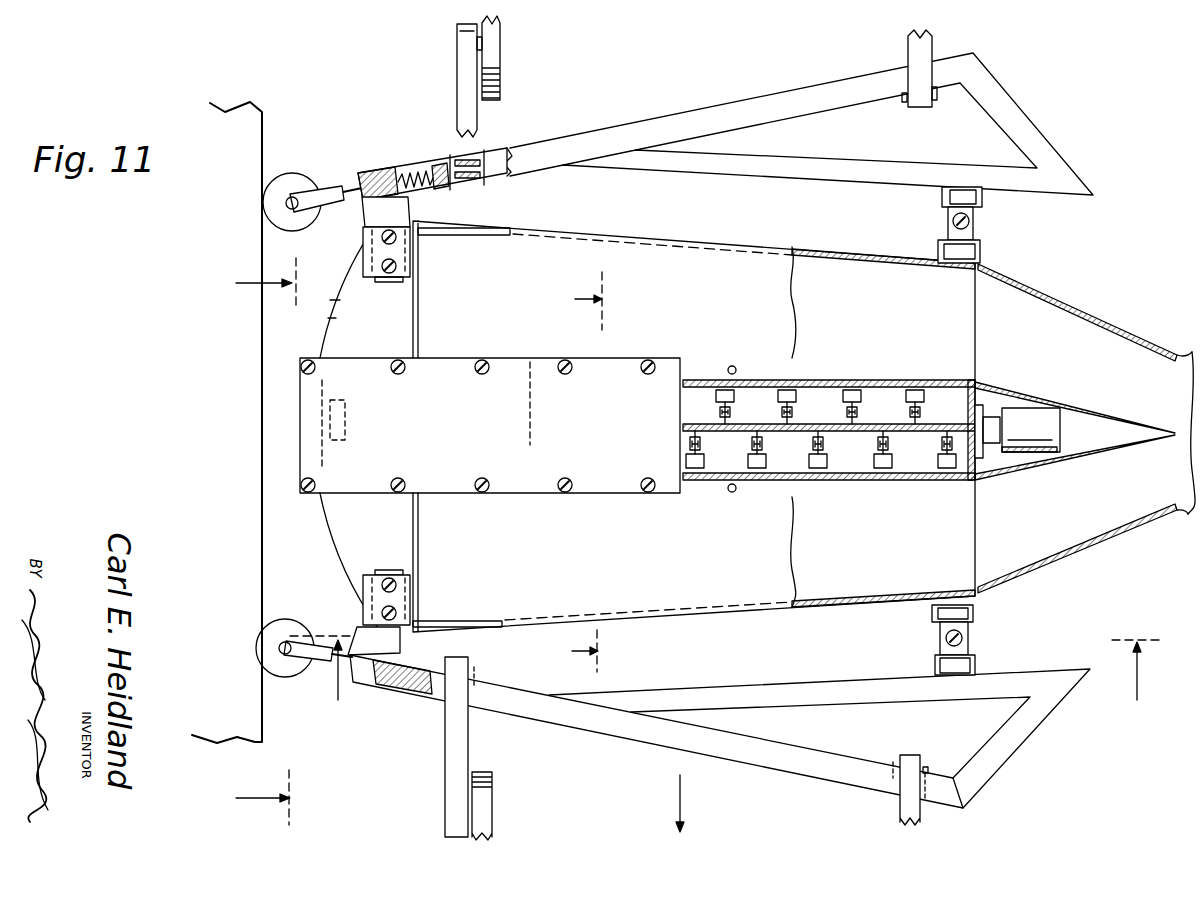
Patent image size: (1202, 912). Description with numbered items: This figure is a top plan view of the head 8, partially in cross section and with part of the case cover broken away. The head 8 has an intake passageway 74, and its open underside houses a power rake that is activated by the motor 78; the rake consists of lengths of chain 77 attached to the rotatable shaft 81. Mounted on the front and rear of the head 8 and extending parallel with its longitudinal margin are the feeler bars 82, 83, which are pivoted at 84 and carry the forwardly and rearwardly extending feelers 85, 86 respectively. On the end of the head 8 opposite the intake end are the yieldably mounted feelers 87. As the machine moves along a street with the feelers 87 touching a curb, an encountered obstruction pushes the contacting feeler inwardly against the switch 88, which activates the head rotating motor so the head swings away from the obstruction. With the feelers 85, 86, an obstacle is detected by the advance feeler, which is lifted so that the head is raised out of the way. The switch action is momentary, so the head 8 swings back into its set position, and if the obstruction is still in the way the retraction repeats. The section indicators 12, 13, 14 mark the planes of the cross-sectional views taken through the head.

The head 8 is at (718, 248).
The section line 12- 12 is at (244, 541).
The section line 13- 13 is at (563, 472).
The section line 14- 14 is at (726, 692).
The intake passageway 74 is at (1182, 514).
The lengths of chain 77 is at (910, 395).
The motor 78 is at (1020, 423).
The rotatable shaft 81 is at (872, 433).
The feeler bar 82 is at (760, 687).
The feeler bar 83 is at (885, 165).
The pivot 84 is at (982, 222).
The feelers 85 is at (503, 40).
The feelers 86 is at (478, 803).
The yieldably mounted feelers 87 is at (300, 170).
The switch 88 is at (442, 157).